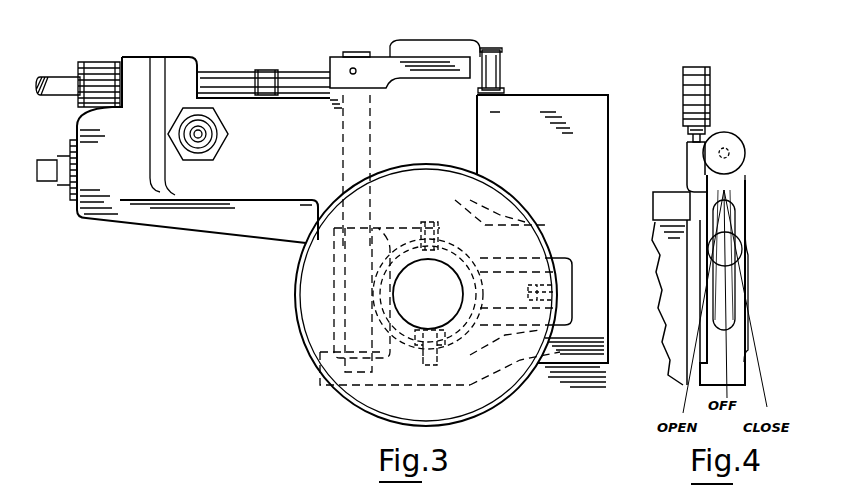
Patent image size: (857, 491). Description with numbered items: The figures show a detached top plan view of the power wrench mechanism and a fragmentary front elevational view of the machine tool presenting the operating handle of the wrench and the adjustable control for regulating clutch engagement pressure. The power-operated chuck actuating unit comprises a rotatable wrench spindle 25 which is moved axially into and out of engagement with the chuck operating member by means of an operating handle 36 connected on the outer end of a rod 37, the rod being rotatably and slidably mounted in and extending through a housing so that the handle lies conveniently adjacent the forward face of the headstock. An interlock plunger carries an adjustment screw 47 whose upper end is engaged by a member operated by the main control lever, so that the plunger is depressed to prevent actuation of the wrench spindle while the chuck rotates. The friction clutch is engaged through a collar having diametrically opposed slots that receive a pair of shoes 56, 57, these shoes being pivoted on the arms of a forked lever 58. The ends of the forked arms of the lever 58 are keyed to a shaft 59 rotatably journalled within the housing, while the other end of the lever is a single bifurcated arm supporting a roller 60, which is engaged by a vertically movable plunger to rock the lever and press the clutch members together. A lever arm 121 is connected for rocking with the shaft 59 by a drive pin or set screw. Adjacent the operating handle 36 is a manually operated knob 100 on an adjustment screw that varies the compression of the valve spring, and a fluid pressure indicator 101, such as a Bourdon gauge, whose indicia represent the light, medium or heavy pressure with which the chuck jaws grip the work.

In FIG. 3, the wrench spindle 25 is at (50, 175).
In FIG. 3, the rod 37 is at (63, 90).
In FIG. 3, the adjustment screw 47 is at (197, 145).
In FIG. 3, the shoe 56 is at (418, 358).
In FIG. 3, the shoe 57 is at (436, 232).
In FIG. 3, the forked lever 58 is at (472, 385).
In FIG. 3, the shaft 59 is at (368, 146).
In FIG. 3, the roller 60 is at (527, 292).
In FIG. 4, the knob 100 is at (742, 150).
In FIG. 4, the fluid pressure indicator 101 is at (730, 52).
In FIG. 3, the lever arm 121 is at (386, 62).
In FIG. 4, the operating handle 36 is at (728, 297).